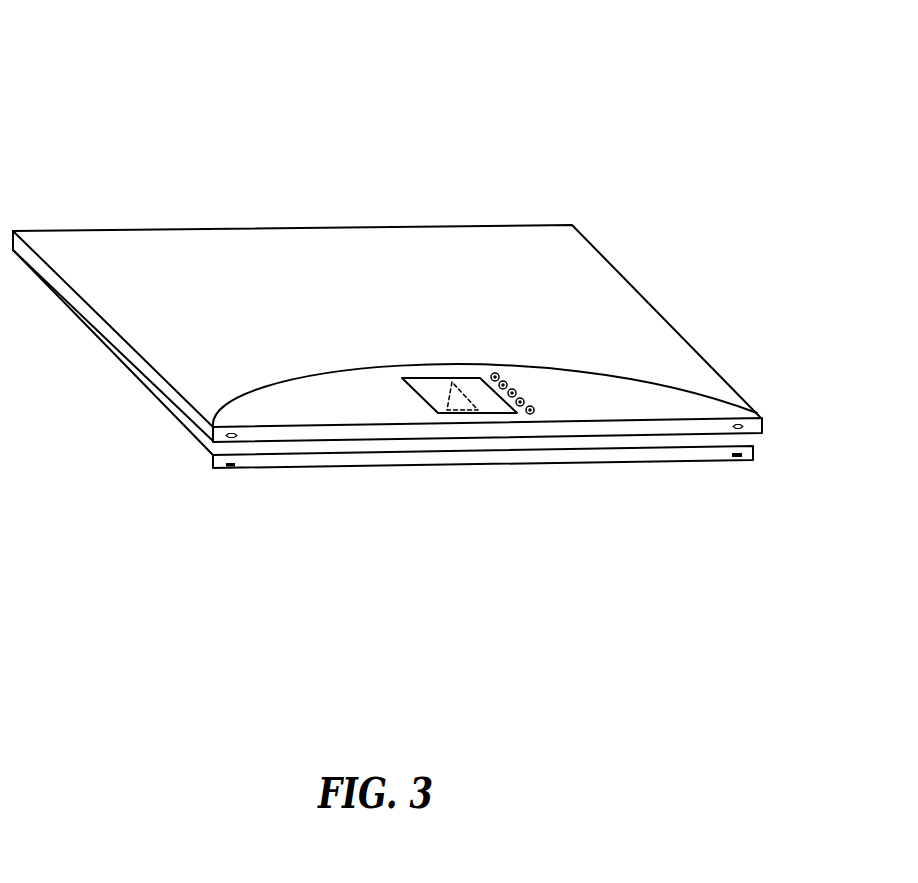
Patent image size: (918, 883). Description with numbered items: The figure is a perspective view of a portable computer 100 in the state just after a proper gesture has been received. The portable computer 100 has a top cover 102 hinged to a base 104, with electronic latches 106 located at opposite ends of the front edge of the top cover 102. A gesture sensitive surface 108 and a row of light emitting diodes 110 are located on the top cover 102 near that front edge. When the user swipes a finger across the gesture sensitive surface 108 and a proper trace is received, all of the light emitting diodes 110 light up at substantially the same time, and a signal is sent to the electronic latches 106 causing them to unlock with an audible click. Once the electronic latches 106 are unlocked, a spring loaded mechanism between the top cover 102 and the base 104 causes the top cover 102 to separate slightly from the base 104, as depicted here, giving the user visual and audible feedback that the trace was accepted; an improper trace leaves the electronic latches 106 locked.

The portable computer 100 is at (604, 113).
The top cover 102 is at (230, 252).
The base 104 is at (387, 455).
The electronic latches 106 is at (210, 452).
The gesture sensitive surface 108 is at (488, 400).
The light emitting diodes 110 is at (513, 390).